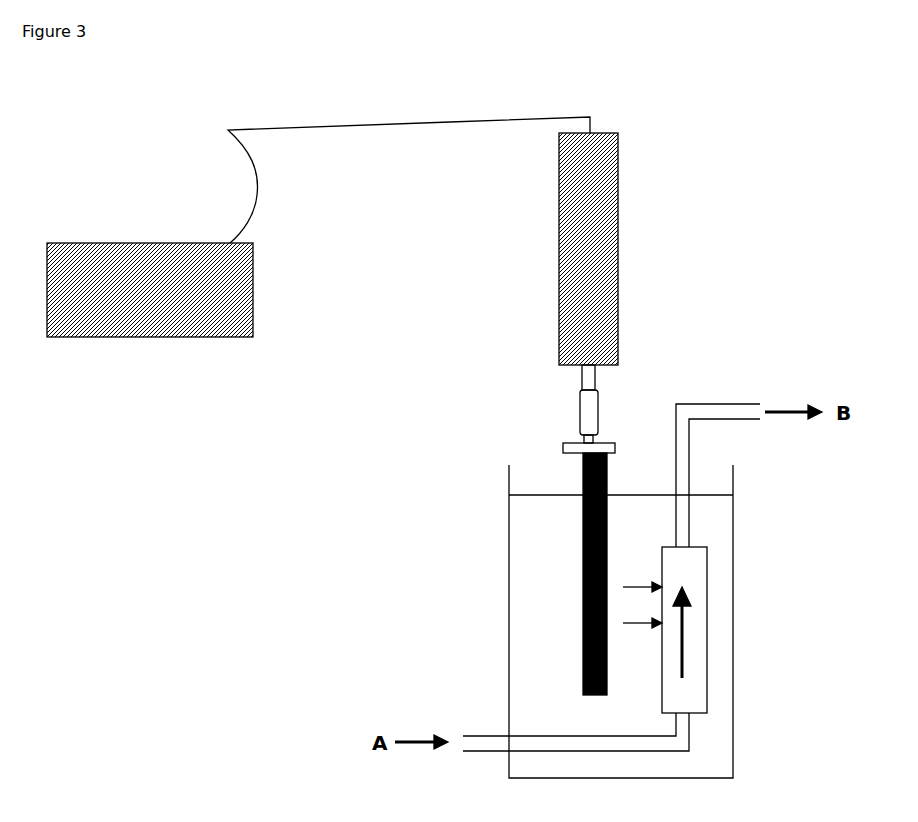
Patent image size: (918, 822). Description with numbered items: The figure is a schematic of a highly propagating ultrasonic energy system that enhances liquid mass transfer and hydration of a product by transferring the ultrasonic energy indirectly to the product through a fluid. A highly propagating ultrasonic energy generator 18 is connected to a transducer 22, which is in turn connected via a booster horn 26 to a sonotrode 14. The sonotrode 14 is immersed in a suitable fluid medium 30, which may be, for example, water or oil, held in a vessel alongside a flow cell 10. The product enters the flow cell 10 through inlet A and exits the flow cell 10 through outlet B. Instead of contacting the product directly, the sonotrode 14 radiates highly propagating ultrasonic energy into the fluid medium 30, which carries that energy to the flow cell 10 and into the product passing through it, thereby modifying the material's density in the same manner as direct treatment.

The flow cell 10 is at (693, 697).
The sonotrode 14 is at (583, 573).
The highly propagating ultrasonic energy generator 18 is at (138, 337).
The transducer 22 is at (559, 207).
The booster horn 26 is at (580, 407).
The fluid medium 30 is at (545, 707).